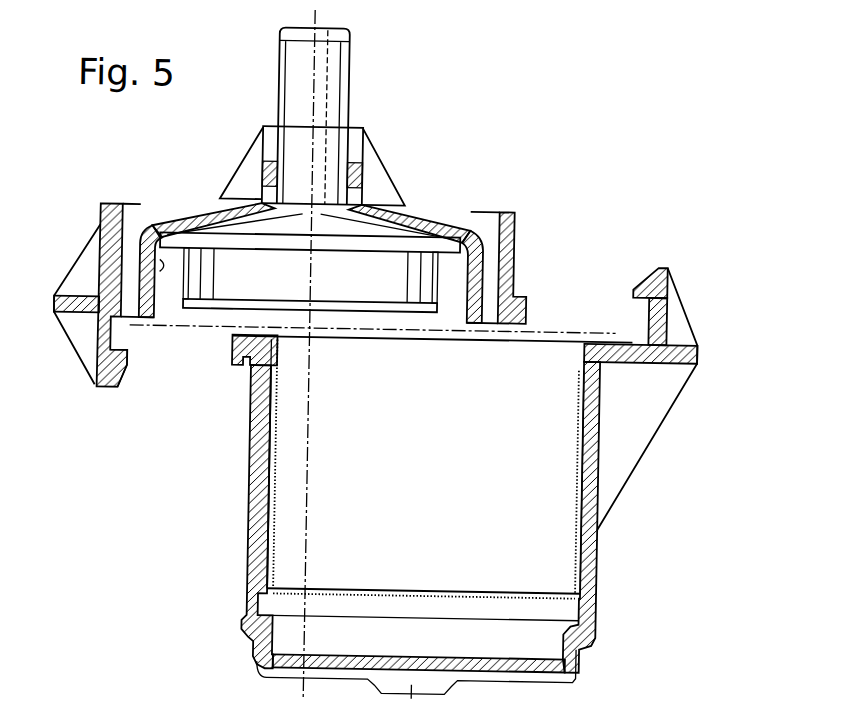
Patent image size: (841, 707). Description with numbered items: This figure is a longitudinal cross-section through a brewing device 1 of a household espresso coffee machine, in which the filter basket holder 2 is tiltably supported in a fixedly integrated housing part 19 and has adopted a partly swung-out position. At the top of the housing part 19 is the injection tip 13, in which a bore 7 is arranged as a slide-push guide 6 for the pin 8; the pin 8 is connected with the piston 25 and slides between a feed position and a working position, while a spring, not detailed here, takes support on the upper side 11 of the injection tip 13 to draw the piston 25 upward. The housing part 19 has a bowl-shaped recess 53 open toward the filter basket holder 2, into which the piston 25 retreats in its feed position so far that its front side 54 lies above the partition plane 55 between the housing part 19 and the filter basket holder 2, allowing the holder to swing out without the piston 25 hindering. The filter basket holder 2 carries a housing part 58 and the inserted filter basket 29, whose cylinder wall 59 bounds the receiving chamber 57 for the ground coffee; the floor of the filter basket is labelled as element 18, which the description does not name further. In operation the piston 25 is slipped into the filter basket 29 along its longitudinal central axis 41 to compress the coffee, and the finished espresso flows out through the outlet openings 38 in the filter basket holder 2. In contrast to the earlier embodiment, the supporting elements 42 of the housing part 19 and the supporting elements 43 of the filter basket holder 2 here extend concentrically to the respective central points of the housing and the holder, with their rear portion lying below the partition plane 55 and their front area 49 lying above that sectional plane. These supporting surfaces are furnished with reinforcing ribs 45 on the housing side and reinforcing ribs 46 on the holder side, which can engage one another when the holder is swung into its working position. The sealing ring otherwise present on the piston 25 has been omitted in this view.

The brewing device 1 is at (522, 194).
The filter basket holder 2 is at (603, 477).
The slide-push guide 6 is at (363, 127).
The bore 7 is at (288, 188).
The pin 8 is at (332, 77).
The upper side 11 is at (266, 164).
The injection tip 13 is at (185, 213).
The bottom 18 is at (390, 587).
The housing part 19 is at (97, 212).
The piston 25 is at (387, 288).
The filter basket 29 is at (275, 479).
The outlet openings 38 is at (420, 690).
The longitudinal central axis 41 is at (300, 688).
The supporting elements 42 is at (122, 356).
The supporting elements 43 is at (238, 368).
The reinforcing ribs 45 is at (82, 352).
The reinforcing ribs 46 is at (677, 327).
The front area 49 is at (689, 289).
The bowl-shaped recess 53 is at (157, 268).
The front side 54 is at (222, 313).
The partition plane 55 is at (338, 333).
The receiving chamber 57 is at (528, 540).
The housing part 58 is at (253, 528).
The cylinder wall 59 is at (276, 418).